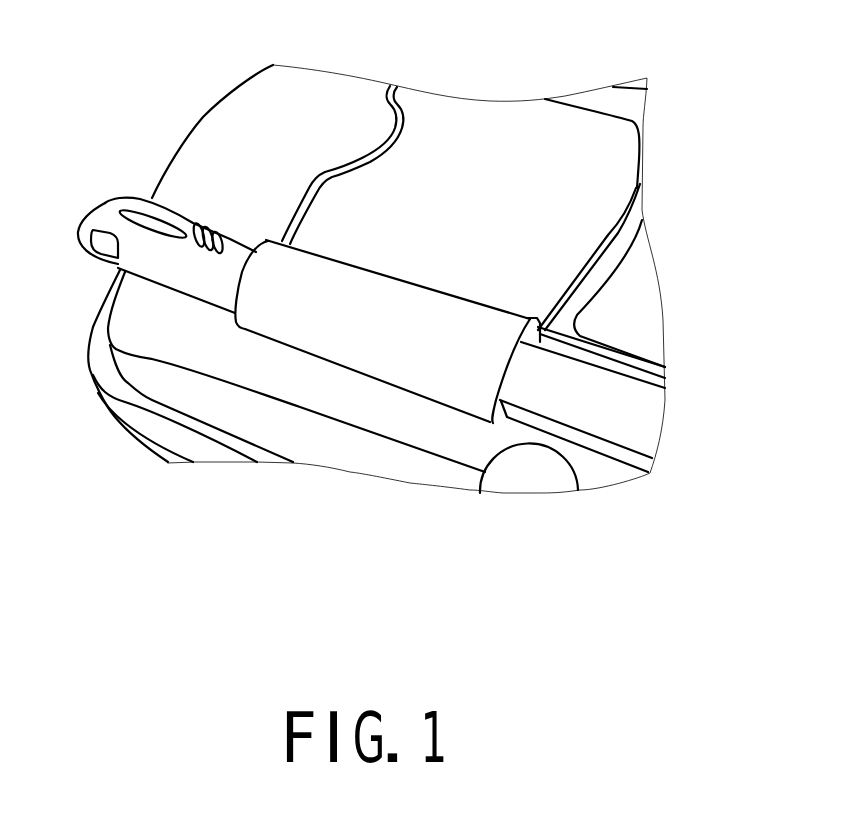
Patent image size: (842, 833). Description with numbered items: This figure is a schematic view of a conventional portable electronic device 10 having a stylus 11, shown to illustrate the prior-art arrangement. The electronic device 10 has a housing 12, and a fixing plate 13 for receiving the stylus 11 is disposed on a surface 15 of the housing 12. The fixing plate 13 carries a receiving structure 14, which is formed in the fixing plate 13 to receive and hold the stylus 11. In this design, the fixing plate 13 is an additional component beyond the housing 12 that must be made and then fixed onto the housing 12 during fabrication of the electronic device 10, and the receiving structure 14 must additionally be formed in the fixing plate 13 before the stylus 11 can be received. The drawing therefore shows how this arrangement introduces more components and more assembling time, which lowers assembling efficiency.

The electronic device 10 is at (780, 552).
The stylus 11 is at (647, 421).
The housing 12 is at (122, 350).
The fixing plate 13 is at (527, 298).
The receiving structure 14 is at (358, 335).
The surface 15 is at (227, 150).